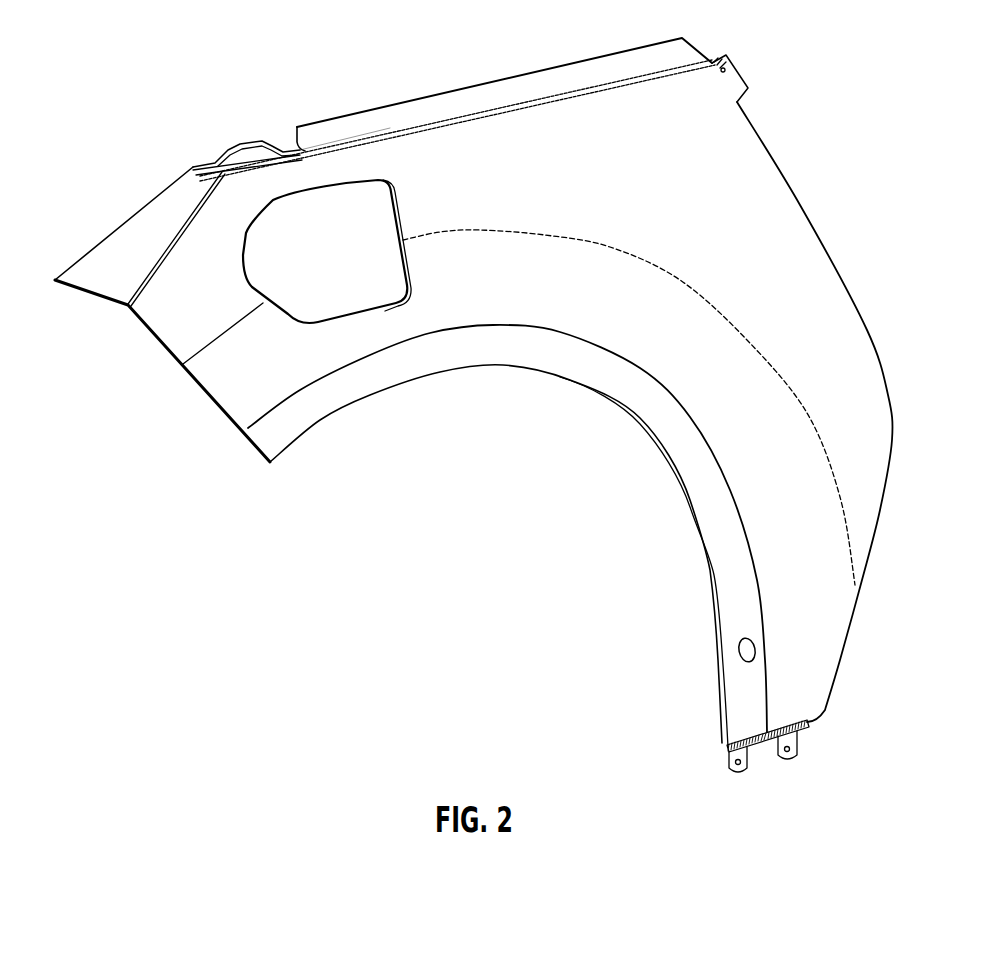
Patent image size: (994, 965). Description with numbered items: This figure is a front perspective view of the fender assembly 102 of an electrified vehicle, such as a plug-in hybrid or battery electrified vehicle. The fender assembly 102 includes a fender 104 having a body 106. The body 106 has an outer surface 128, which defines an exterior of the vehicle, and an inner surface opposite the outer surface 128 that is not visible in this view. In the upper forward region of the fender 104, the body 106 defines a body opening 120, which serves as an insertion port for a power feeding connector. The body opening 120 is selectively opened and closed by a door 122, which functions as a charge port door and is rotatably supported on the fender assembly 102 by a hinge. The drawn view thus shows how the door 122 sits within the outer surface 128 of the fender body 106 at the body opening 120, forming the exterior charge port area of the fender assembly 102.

The fender assembly 102 is at (582, 121).
The fender 104 is at (508, 130).
The body 106 is at (762, 182).
The body opening 120 is at (397, 207).
The door 122 is at (350, 193).
The outer surface 128 is at (513, 313).